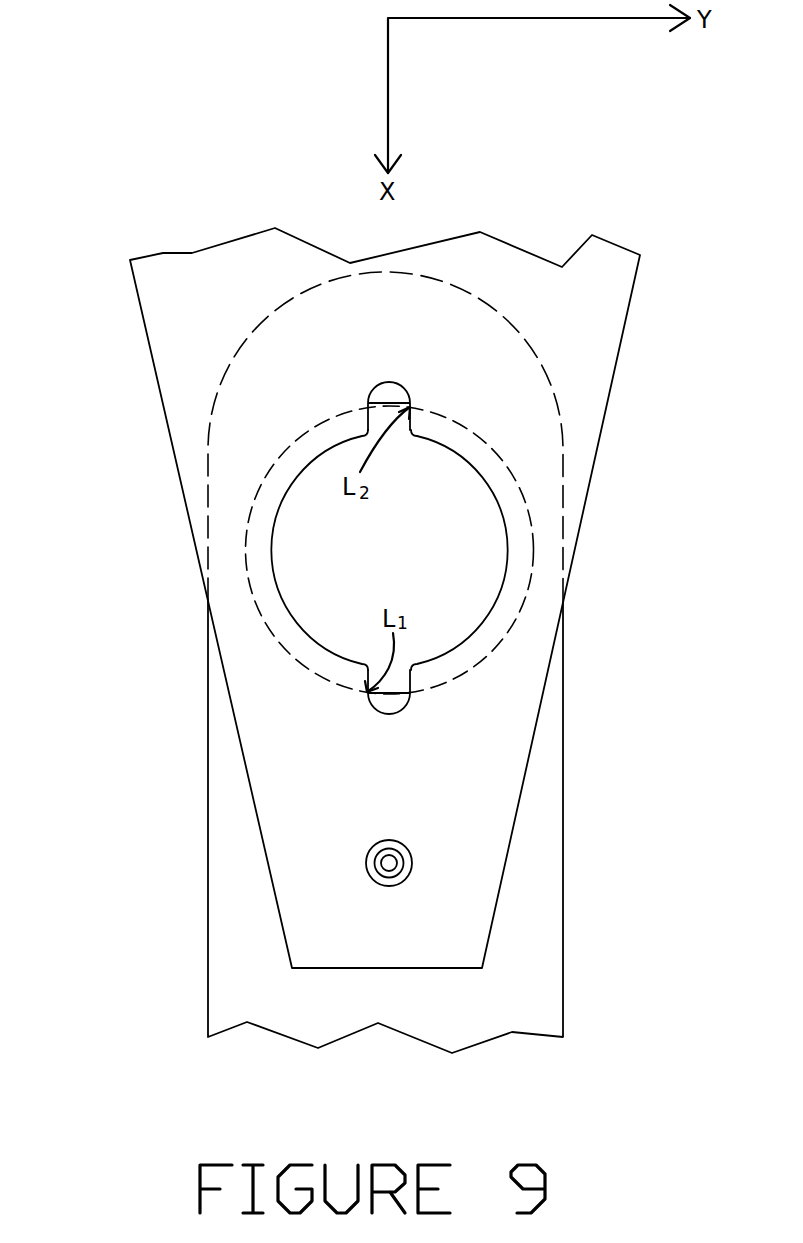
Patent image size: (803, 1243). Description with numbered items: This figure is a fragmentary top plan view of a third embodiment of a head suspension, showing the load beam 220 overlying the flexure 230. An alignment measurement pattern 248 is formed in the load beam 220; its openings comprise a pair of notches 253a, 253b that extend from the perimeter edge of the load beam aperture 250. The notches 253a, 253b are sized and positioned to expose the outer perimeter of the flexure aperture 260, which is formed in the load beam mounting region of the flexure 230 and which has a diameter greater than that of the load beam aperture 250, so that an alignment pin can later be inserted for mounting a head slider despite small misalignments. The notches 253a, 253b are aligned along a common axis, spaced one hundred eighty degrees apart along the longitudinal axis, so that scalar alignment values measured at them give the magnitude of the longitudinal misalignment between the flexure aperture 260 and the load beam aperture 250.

The load beam 220 is at (190, 318).
The flexure 230 is at (228, 983).
The alignment measurement pattern 248 is at (478, 685).
The load beam aperture 250 is at (350, 587).
The notch 253a is at (392, 705).
The notch 253b is at (393, 393).
The flexure aperture 260 is at (512, 498).